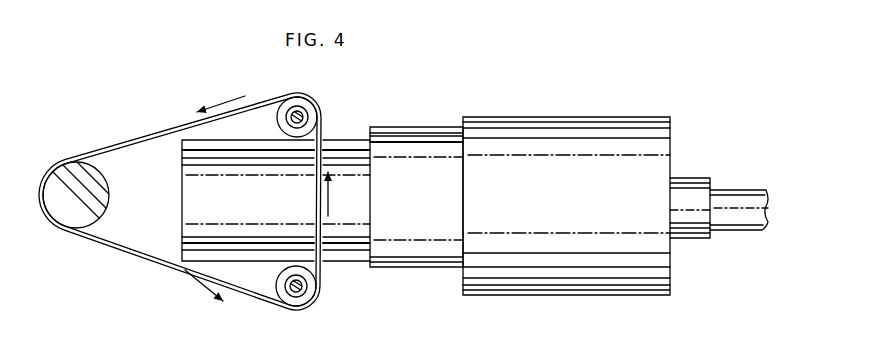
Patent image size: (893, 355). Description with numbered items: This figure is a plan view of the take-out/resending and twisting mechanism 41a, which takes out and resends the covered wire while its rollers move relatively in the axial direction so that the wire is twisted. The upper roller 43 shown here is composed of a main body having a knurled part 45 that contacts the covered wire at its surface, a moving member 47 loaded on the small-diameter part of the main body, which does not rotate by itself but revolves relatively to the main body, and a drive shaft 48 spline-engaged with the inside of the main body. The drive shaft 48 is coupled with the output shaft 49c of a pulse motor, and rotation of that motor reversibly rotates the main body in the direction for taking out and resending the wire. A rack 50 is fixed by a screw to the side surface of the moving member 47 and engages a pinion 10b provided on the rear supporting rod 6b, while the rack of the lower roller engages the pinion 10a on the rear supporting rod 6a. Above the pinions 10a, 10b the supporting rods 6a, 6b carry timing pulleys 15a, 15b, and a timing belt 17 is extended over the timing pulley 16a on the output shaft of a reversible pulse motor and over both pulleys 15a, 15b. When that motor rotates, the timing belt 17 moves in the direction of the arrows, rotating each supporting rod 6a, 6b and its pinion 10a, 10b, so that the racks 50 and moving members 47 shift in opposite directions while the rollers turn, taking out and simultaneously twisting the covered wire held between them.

The timing pulley 16a is at (65, 172).
The timing belt 17 is at (138, 138).
The timing pulley 15a is at (282, 103).
The timing pulley 15b is at (276, 293).
The rear supporting rod 6a is at (298, 106).
The rear supporting rod 6b is at (310, 303).
The pinion 10a is at (318, 106).
The pinion 10b is at (318, 276).
The moving member 47 is at (181, 191).
The rack 50 is at (181, 150).
The twisting mechanism 41a is at (338, 140).
The upper roller 43 is at (601, 116).
The knurled part 45 is at (513, 116).
The drive shaft 48 is at (687, 183).
The output shaft 49c is at (738, 190).